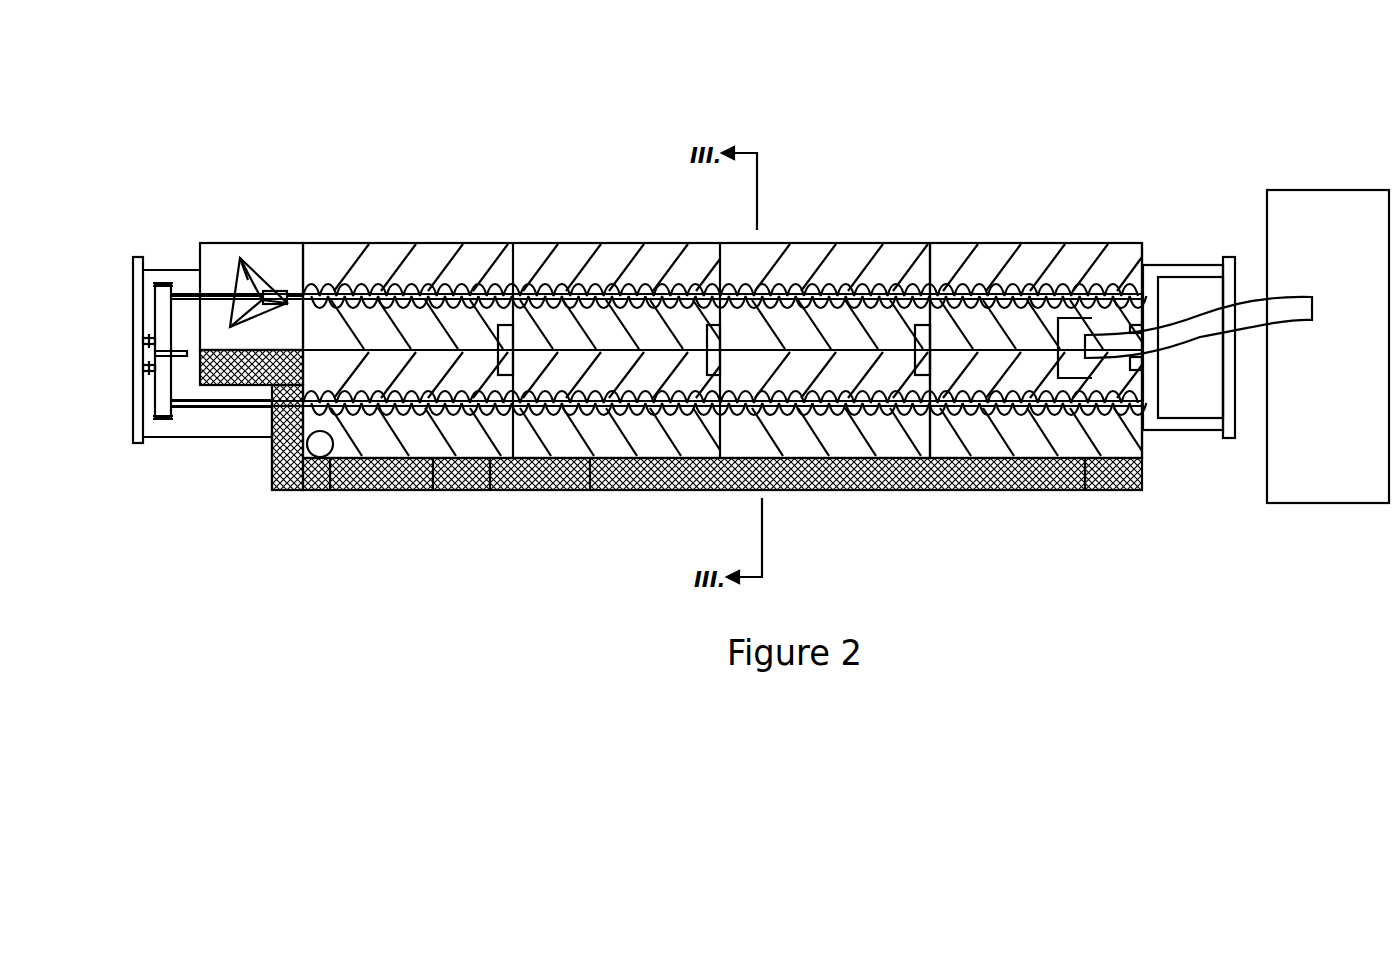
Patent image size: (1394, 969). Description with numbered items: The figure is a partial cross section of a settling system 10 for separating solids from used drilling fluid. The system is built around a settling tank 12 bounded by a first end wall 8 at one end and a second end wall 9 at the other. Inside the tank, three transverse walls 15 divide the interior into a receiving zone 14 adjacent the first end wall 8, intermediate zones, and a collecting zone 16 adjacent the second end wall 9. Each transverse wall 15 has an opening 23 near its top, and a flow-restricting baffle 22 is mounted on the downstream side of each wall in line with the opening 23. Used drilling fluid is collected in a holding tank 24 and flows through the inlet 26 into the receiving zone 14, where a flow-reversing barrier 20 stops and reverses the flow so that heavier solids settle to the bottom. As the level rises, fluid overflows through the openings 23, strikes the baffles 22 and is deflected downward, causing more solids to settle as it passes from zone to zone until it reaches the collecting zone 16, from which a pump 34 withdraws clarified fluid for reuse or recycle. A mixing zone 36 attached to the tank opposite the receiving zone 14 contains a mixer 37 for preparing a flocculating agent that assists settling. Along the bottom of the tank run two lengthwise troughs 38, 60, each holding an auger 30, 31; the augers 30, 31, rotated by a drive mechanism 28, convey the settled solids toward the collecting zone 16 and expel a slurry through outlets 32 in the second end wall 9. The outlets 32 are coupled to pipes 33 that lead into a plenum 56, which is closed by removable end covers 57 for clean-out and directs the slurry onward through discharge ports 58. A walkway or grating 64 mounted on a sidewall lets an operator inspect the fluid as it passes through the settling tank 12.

The first end wall 8 is at (1143, 252).
The second end wall 9 is at (298, 262).
The settling system 10 is at (627, 150).
The settling tank 12 is at (952, 275).
The receiving zone 14 is at (1070, 445).
The transverse wall 15 is at (512, 268).
The collecting zone 16 is at (488, 445).
The flow-reversing barrier 20 is at (1075, 318).
The flow-restricting baffle 22 is at (446, 286).
The opening 23 is at (512, 325).
The holding tank 24 is at (1330, 212).
The inlet 26 is at (1255, 305).
The drive mechanism 28 is at (1200, 405).
The auger 30 is at (340, 286).
The auger 31 is at (615, 420).
The outlet 32 is at (278, 455).
The pipe 33 is at (186, 290).
The pump 34 is at (322, 453).
The mixing zone 36 is at (271, 255).
The mixer 37 is at (238, 262).
The trough 38 is at (378, 267).
The plenum 56 is at (175, 420).
The end cover 57 is at (143, 266).
The discharge port 58 is at (148, 370).
The trough 60 is at (420, 445).
The walkway or grating 64 is at (377, 490).